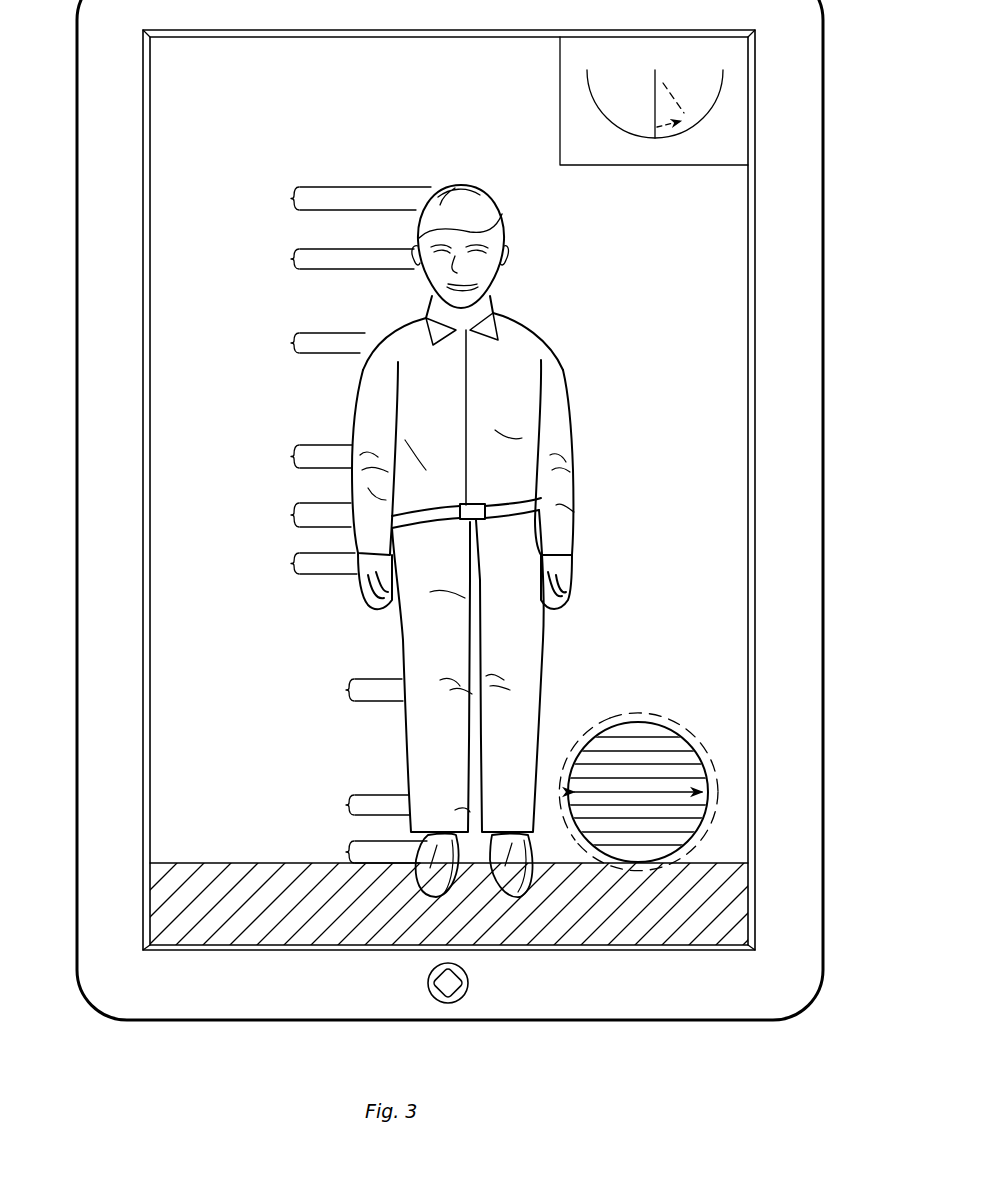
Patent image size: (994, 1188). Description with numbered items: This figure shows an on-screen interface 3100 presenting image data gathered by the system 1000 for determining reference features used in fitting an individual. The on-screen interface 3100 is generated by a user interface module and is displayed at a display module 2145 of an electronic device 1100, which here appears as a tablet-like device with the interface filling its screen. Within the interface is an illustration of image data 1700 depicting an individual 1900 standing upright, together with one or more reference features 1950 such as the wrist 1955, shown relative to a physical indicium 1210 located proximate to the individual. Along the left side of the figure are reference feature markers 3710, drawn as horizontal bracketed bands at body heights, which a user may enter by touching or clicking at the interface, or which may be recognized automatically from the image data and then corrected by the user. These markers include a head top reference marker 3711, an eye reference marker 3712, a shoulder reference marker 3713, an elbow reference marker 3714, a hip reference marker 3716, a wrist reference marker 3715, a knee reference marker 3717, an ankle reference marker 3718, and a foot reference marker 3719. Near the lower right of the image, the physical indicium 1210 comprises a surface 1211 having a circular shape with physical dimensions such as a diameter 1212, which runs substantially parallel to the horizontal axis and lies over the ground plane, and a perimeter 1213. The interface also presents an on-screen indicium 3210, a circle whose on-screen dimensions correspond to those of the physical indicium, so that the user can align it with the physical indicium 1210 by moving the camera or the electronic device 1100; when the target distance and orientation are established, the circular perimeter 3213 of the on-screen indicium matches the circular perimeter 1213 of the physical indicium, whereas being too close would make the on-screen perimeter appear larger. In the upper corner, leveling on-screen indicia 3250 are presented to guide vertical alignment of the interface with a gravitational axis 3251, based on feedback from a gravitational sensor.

The system 1000 is at (668, 1076).
The electronic device 1100 is at (756, 1000).
The on-screen interface 3100 is at (712, 244).
The image data 1700 is at (705, 317).
The display module 2145 is at (673, 920).
The leveling on-screen indicia 3250 is at (576, 100).
The gravitational axis 3251 is at (664, 96).
The individual 1900 is at (437, 541).
The reference features 1950 is at (303, 597).
The wrist 1955 is at (356, 585).
The reference feature markers 3710 is at (314, 490).
The head top reference marker 3711 is at (338, 200).
The eye reference marker 3712 is at (327, 260).
The shoulder reference marker 3713 is at (302, 344).
The elbow reference marker 3714 is at (297, 458).
The hip reference marker 3716 is at (296, 516).
The wrist reference marker 3715 is at (299, 565).
The knee reference marker 3717 is at (350, 691).
The ankle reference marker 3718 is at (353, 805).
The foot reference marker 3719 is at (361, 853).
The physical indicium 1210 is at (649, 764).
The surface 1211 is at (648, 770).
The diameter 1212 is at (672, 790).
The perimeter 1213 is at (607, 728).
The on-screen indicium 3210 is at (687, 730).
The circular perimeter 3213 is at (712, 815).